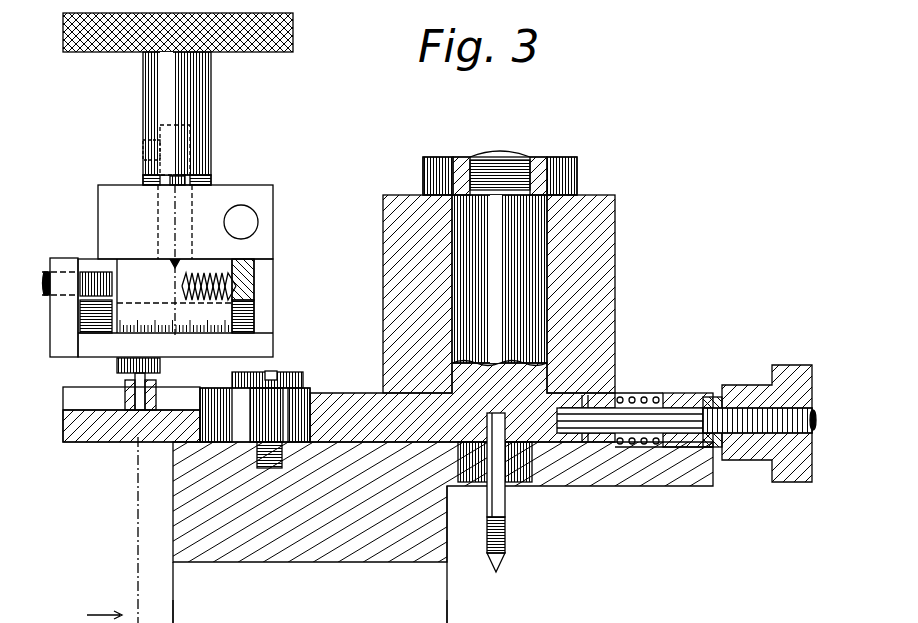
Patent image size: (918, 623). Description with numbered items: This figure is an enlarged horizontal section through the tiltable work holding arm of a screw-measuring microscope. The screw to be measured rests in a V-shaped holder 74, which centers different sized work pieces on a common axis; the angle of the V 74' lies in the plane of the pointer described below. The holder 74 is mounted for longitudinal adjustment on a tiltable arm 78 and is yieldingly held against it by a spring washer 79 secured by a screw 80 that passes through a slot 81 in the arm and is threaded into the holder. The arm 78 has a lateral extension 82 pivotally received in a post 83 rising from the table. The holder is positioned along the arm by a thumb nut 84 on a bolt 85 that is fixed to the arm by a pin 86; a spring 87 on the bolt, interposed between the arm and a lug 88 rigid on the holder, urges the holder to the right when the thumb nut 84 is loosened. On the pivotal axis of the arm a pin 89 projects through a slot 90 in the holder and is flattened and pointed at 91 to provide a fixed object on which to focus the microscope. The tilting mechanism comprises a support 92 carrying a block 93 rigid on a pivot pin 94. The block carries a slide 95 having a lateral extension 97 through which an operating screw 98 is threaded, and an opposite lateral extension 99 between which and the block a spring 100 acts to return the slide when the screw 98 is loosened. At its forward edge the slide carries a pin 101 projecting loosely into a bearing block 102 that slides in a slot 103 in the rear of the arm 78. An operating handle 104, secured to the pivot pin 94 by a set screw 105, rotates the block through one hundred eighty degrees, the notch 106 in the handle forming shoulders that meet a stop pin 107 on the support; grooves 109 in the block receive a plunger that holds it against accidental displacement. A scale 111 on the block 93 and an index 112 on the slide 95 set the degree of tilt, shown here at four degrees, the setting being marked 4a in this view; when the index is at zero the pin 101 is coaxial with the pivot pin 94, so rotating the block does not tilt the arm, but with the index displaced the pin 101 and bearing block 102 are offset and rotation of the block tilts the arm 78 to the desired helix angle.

The slot 4a is at (190, 125).
The operating handle 104 is at (217, 73).
The set screw 105 is at (143, 143).
The notch 106 is at (211, 181).
The stop pin 107 is at (145, 181).
The support 92 is at (273, 213).
The pivot pin 94 is at (160, 200).
The block 93 is at (137, 268).
The operating screw 98 is at (88, 268).
The lateral extension 97 is at (60, 353).
The grooves 109 is at (178, 258).
The spring 100 is at (245, 268).
The lateral extension 99 is at (273, 278).
The slide 95 is at (258, 340).
The index 112 is at (165, 331).
The scale 111 is at (212, 336).
The bearing block 102 is at (125, 405).
The pin 101 is at (150, 376).
The slot 103 is at (177, 402).
The spring washer 79 is at (255, 428).
The screw 80 is at (280, 392).
The slot 81 is at (310, 395).
The tiltable arm 78 is at (350, 393).
The V-shaped holder 74 is at (400, 530).
The angle of the V 74' is at (336, 600).
The post 83 is at (615, 240).
The lateral extension 82 is at (545, 302).
The slot 90 is at (478, 478).
The pin 89 is at (507, 501).
The pointer 91 is at (500, 556).
The pin 86 is at (612, 390).
The spring 87 is at (620, 396).
The bolt 85 is at (682, 405).
The lug 88 is at (703, 395).
The thumb nut 84 is at (762, 384).